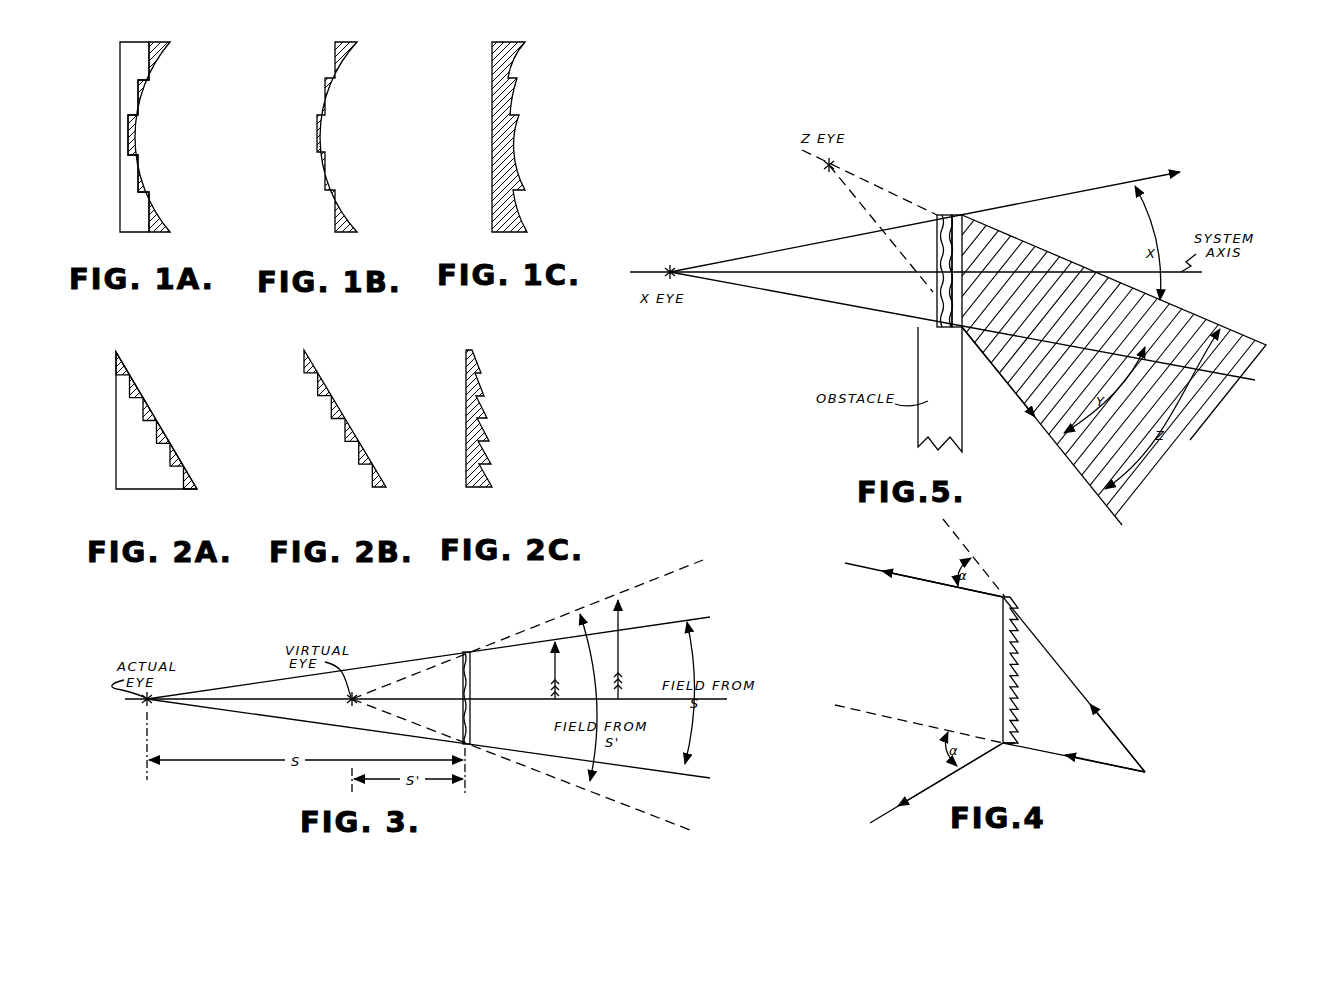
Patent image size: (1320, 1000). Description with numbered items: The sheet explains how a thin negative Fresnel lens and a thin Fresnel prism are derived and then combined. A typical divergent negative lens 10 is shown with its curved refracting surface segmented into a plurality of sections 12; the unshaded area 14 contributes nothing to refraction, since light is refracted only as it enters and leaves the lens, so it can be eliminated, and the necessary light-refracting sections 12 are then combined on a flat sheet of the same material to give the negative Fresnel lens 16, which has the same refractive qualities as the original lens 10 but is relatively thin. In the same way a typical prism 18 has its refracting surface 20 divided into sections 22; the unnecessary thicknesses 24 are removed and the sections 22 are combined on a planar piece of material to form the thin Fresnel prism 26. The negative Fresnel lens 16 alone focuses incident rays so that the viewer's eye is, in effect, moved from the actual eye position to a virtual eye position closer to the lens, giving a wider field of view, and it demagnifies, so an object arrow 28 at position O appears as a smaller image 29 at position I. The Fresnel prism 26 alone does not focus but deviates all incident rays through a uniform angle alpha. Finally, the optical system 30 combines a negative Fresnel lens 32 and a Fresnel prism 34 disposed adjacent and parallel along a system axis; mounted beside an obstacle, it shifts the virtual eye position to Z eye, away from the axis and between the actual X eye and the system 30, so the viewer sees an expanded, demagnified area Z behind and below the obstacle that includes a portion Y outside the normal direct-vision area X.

In FIG. 1A, the negative lens 10 is at (125, 137).
In FIG. 1A, the refracting sections 12 is at (147, 90).
In FIG. 1B, the refracting sections 12 is at (335, 92).
In FIG. 1A, the unshaded area 14 is at (133, 198).
In FIG. 1C, the negative Fresnel lens 16 is at (519, 92).
In FIG. 3, the negative Fresnel lens 16 is at (466, 650).
In FIG. 2A, the prism 18 is at (147, 406).
In FIG. 2A, the refracting surface 20 is at (170, 406).
In FIG. 2A, the refracting sections 22 is at (157, 410).
In FIG. 2B, the refracting sections 22 is at (327, 390).
In FIG. 2A, the unnecessary thicknesses 24 is at (132, 457).
In FIG. 2C, the Fresnel prism 26 is at (474, 347).
In FIG. 4, the Fresnel prism 26 is at (1010, 596).
In FIG. 3, the object arrow 28 is at (620, 598).
In FIG. 3, the image 29 is at (552, 645).
In FIG. 5, the optical system 30 is at (947, 222).
In FIG. 5, the negative Fresnel lens 32 is at (938, 214).
In FIG. 5, the Fresnel prism 34 is at (962, 215).